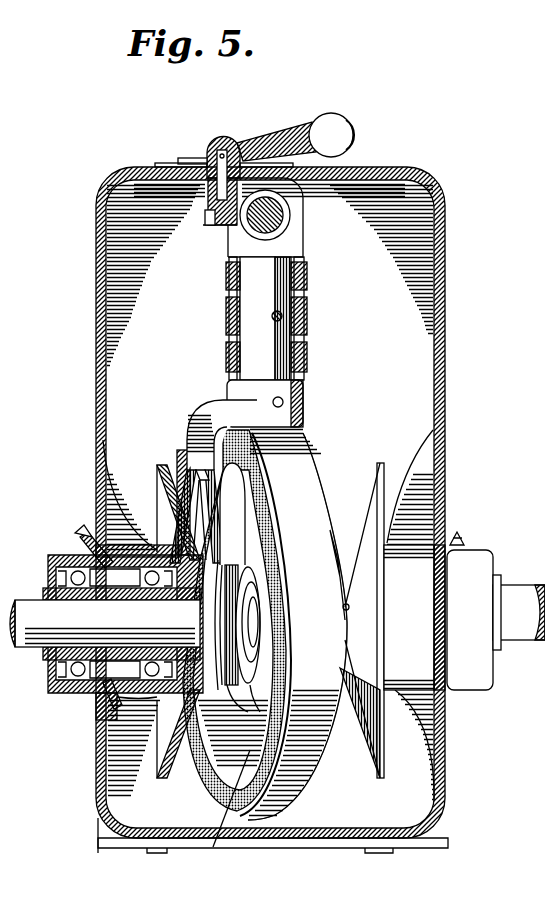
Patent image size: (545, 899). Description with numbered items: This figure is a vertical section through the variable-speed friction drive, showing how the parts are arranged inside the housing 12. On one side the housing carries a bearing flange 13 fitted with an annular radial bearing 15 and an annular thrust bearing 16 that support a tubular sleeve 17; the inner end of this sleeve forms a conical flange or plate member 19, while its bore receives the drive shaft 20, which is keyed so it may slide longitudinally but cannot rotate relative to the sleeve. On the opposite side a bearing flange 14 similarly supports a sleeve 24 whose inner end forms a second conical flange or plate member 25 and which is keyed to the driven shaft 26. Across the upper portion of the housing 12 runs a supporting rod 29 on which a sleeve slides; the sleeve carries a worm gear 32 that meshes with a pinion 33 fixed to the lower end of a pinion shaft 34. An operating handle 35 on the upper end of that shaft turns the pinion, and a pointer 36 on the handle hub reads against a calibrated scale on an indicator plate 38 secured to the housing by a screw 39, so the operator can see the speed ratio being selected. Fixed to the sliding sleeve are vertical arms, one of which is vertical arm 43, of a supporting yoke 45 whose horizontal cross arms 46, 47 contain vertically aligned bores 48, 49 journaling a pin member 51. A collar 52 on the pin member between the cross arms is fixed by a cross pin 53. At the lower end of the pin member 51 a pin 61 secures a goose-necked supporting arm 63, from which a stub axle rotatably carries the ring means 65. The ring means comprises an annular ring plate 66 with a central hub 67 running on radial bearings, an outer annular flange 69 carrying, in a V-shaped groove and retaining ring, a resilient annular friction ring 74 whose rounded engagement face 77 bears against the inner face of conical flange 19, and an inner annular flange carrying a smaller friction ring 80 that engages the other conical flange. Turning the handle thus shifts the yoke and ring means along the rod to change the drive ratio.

The housing 12 is at (447, 283).
The bearing flange 13 is at (70, 693).
The bearing flange 14 is at (483, 550).
The annular radial bearing 15 is at (72, 558).
The annular thrust bearing 16 is at (150, 695).
The tubular sleeve 17 is at (92, 596).
The conical flange or plate member 19 is at (157, 472).
The drive shaft 20 is at (45, 625).
The sleeve 24 is at (508, 590).
The conical flange or plate member 25 is at (381, 463).
The driven shaft 26 is at (503, 650).
The supporting rod 29 is at (290, 200).
The worm gear 32 is at (283, 213).
The pinion 33 is at (205, 220).
The pinion shaft 34 is at (236, 150).
The operating handle 35 is at (295, 133).
The pointer 36 is at (190, 158).
The indicator plate 38 is at (164, 163).
The screw 39 is at (221, 148).
The vertical arm 43 is at (228, 250).
The supporting yoke 45 is at (224, 317).
The cross arm 46 is at (307, 276).
The cross arm 47 is at (307, 352).
The bore 48 is at (226, 278).
The bore 49 is at (226, 352).
The pin member 51 is at (292, 258).
The collar 52 is at (307, 305).
The cross pin 53 is at (283, 316).
The pin 61 is at (283, 402).
The supporting arm 63 is at (200, 435).
The ring means 65 is at (318, 478).
The annular ring plate 66 is at (203, 778).
The central hub 67 is at (235, 690).
The outer annular flange 69 is at (313, 780).
The annular friction ring 74 is at (284, 520).
The engagement face 77 is at (227, 810).
The friction ring 80 is at (343, 607).